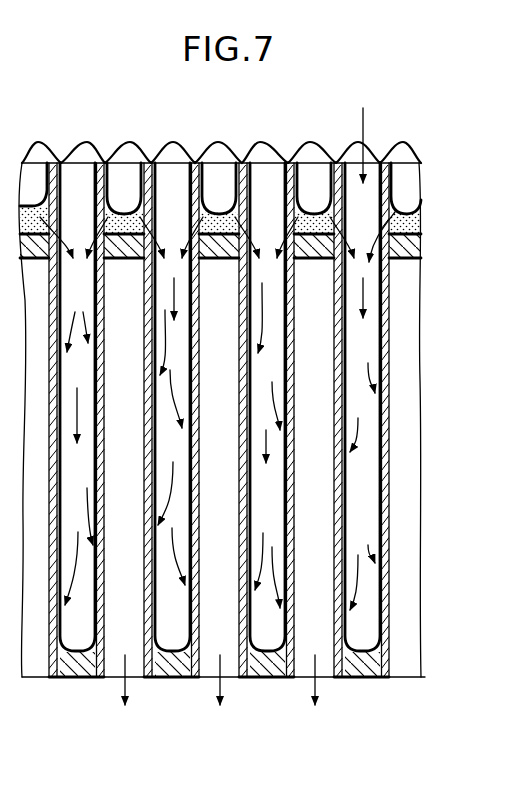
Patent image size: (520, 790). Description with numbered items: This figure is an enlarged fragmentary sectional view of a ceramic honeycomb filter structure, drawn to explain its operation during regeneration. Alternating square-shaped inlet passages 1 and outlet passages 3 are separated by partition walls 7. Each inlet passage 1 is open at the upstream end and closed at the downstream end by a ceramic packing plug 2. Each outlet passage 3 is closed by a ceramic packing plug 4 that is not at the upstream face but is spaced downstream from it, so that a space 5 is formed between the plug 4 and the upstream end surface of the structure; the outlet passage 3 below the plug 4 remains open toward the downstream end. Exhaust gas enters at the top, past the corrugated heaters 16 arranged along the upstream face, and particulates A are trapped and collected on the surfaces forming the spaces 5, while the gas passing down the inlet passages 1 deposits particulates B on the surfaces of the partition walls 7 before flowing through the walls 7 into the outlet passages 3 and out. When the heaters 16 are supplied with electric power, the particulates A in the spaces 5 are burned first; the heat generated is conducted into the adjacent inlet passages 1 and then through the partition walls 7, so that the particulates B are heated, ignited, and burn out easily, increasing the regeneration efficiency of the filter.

The heater 16 is at (273, 143).
The space 5 is at (326, 182).
The particulates A is at (345, 220).
The ceramic packing plug 4 is at (352, 226).
The inlet passage 1 is at (380, 284).
The outlet passage 3 is at (317, 365).
The partition wall 7 is at (297, 398).
The particulates B is at (283, 457).
The ceramic packing plug 2 is at (358, 672).